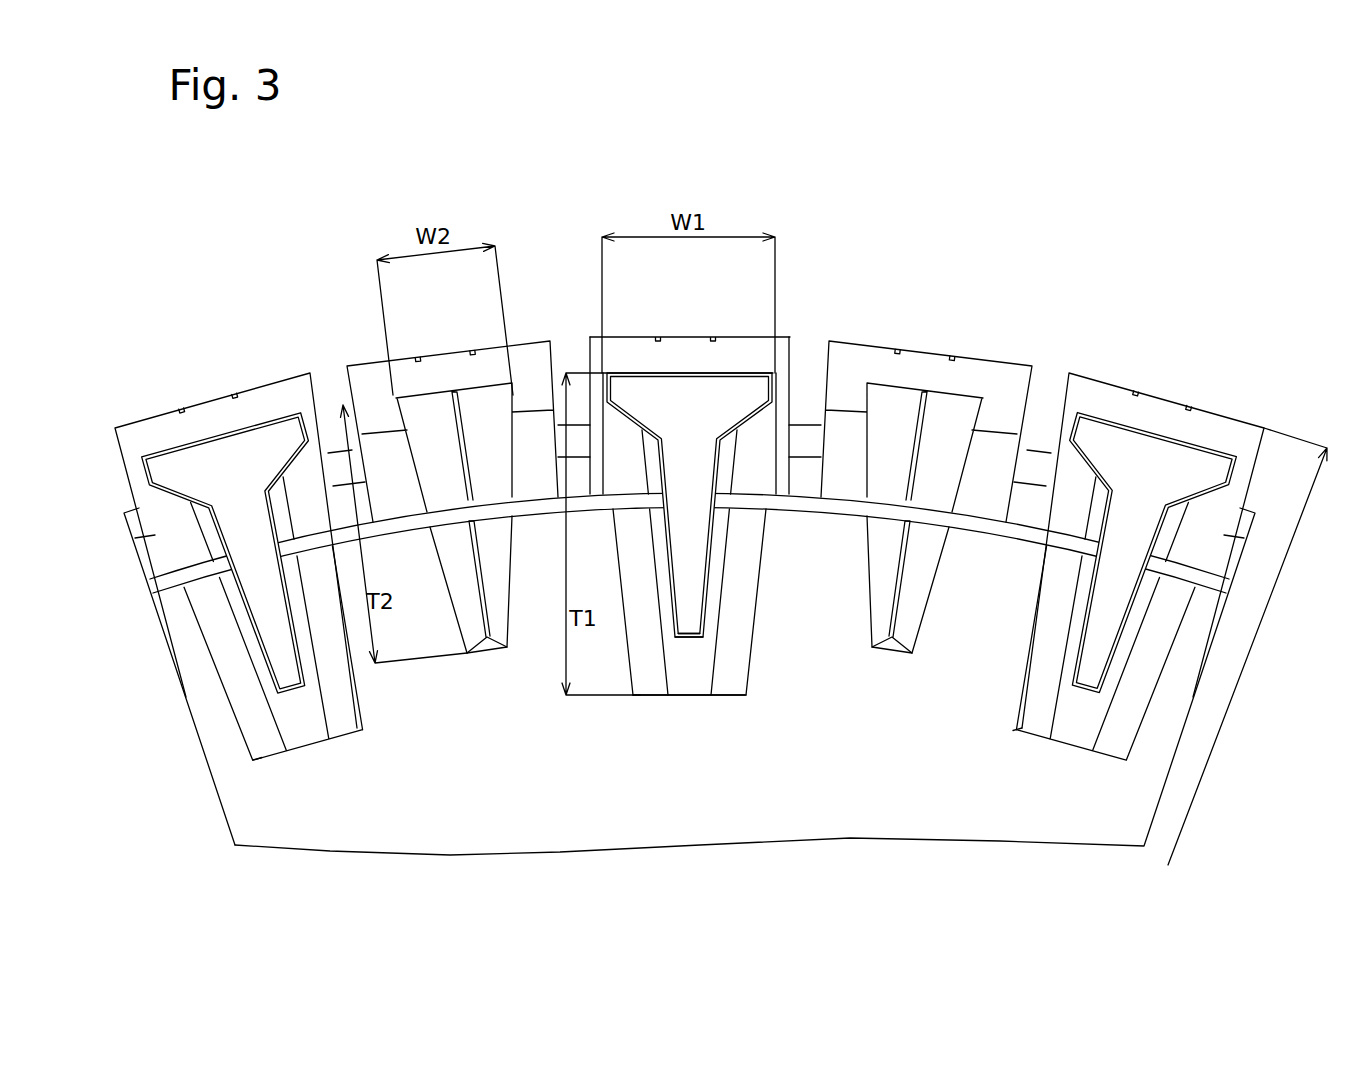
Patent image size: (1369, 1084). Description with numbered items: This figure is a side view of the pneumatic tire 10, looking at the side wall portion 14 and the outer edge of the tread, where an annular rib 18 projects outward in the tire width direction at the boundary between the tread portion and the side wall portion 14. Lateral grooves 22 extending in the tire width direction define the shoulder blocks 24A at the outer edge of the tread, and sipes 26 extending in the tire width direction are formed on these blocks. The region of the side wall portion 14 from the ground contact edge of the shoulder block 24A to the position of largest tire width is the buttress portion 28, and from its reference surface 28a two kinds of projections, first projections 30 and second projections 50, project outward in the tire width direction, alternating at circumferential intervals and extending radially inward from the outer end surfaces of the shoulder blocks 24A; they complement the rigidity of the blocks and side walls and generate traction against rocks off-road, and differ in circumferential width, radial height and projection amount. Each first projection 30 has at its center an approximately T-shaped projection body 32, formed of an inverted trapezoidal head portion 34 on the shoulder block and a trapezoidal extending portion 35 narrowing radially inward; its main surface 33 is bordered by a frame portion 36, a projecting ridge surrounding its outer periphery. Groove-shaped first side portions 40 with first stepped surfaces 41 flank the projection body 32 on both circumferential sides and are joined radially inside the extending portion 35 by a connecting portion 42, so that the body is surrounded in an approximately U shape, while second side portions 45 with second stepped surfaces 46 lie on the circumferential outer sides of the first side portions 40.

The pneumatic tire 10 is at (1197, 230).
The side wall portion 14 is at (898, 808).
The annular rib 18 is at (168, 582).
The lateral groove 22 is at (338, 368).
The shoulder block 24A is at (178, 425).
The sipe 26 is at (238, 396).
The buttress portion 28 is at (1247, 646).
The surface of the buttress portion 28a is at (205, 718).
The first projection 30 is at (240, 771).
The projection body 32 is at (688, 639).
The main surface 33 is at (661, 397).
The head portion 34 is at (708, 373).
The extending portion 35 is at (708, 597).
The frame portion 36 is at (715, 542).
The first side portion 40 is at (657, 537).
The first stepped surface 41 is at (717, 577).
The connecting portion 42 is at (695, 673).
The second side portion 45 is at (735, 672).
The second stepped surface 46 is at (640, 642).
The second projection 50 is at (460, 666).